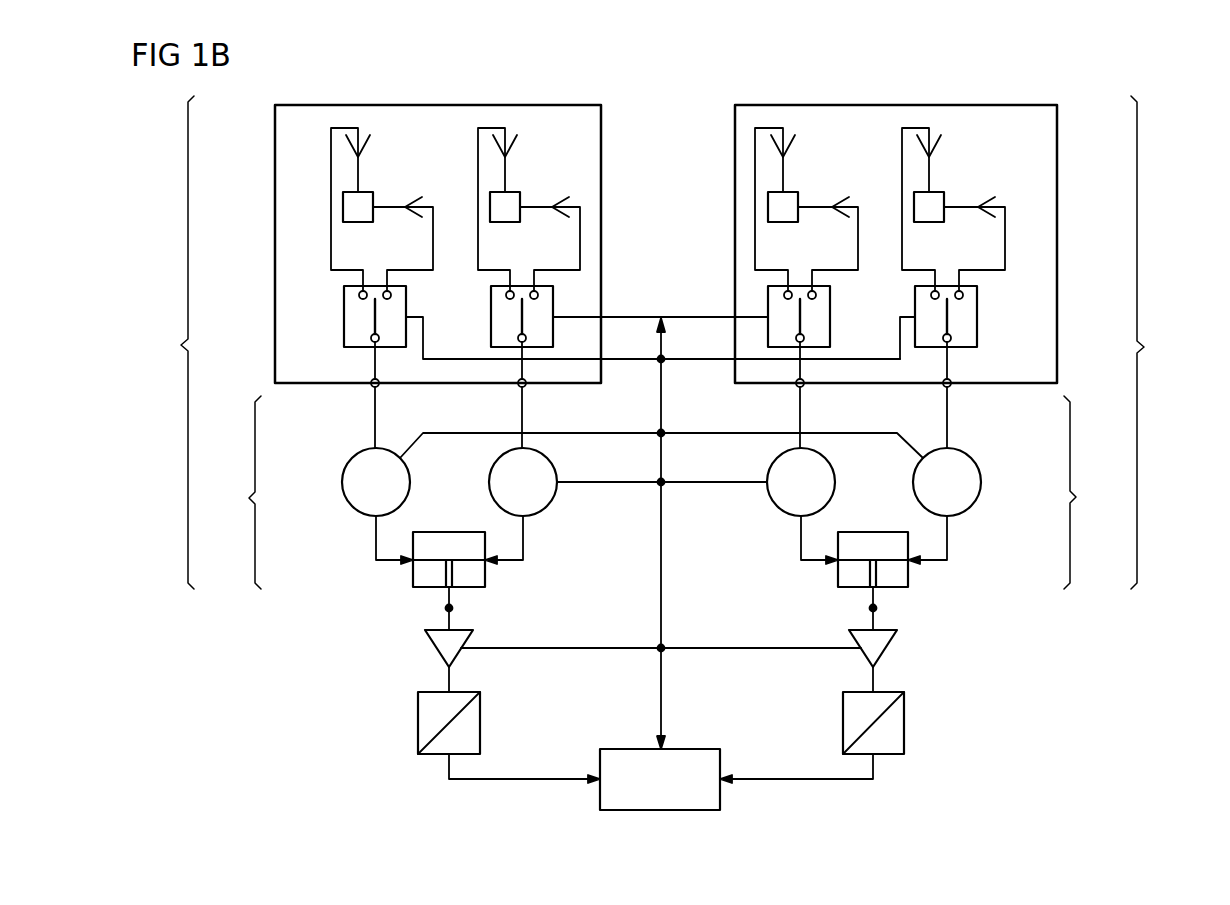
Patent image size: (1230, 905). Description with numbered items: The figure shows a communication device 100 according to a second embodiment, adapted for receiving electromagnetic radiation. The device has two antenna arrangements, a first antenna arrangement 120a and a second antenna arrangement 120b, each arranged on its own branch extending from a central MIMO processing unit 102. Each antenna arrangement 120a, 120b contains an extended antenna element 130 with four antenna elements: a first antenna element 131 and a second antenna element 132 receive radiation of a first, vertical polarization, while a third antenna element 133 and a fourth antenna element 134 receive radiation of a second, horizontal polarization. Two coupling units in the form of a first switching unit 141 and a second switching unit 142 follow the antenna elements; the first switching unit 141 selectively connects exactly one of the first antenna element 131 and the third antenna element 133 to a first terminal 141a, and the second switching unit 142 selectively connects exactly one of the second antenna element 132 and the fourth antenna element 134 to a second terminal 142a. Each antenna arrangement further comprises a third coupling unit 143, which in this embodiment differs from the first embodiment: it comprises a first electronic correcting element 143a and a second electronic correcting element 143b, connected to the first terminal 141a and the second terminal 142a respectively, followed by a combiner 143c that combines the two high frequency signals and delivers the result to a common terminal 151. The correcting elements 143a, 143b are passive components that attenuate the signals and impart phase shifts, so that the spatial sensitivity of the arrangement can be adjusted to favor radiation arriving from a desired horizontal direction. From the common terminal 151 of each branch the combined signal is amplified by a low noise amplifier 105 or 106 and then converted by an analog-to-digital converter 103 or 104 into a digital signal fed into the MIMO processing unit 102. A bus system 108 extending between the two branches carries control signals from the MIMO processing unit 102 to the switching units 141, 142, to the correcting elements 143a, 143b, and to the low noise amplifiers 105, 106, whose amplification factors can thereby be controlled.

The communication device 100 is at (1111, 745).
The MIMO processing unit 102 is at (627, 749).
The analog-to-digital converter 103 is at (418, 723).
The analog-to-digital converter 104 is at (904, 723).
The low noise amplifier 105 is at (437, 650).
The low noise amplifier 106 is at (885, 650).
The bus system 108 is at (664, 694).
The first antenna arrangement 120a is at (162, 342).
The second antenna arrangement 120b is at (1161, 342).
The extended antenna element 130 is at (275, 243).
The first antenna element 131 is at (360, 172).
The second antenna element 132 is at (507, 172).
The third antenna element 133 is at (388, 208).
The fourth antenna element 134 is at (535, 208).
The first switching unit 141 is at (344, 318).
The second switching unit 142 is at (491, 318).
The first terminal 141a is at (380, 387).
The second terminal 142a is at (527, 387).
The third coupling unit 143 is at (663, 492).
The first electronic correcting element 143a is at (342, 482).
The second electronic correcting element 143b is at (547, 510).
The combiner 143c is at (448, 532).
The common terminal 151 is at (445, 608).